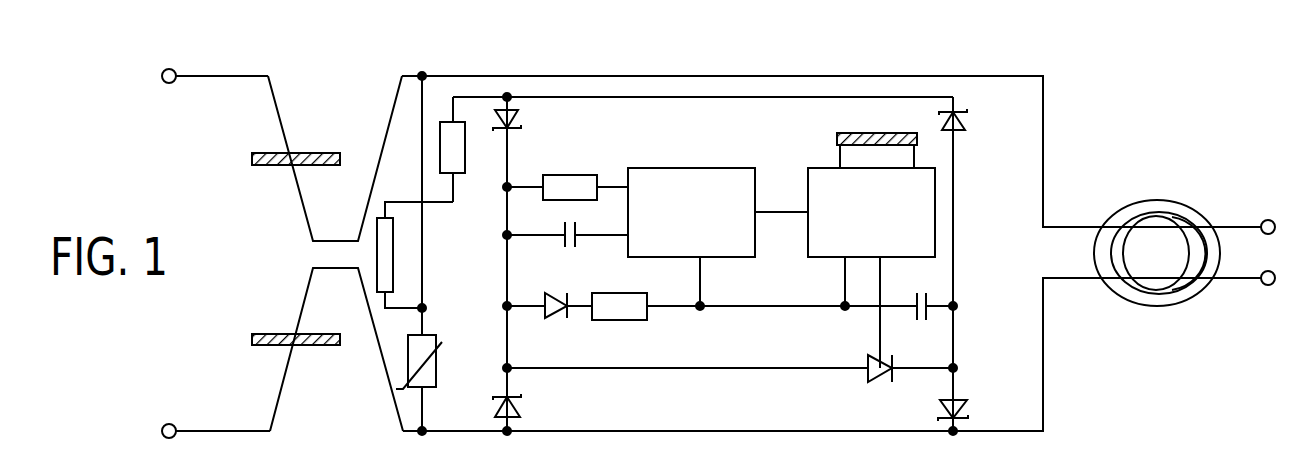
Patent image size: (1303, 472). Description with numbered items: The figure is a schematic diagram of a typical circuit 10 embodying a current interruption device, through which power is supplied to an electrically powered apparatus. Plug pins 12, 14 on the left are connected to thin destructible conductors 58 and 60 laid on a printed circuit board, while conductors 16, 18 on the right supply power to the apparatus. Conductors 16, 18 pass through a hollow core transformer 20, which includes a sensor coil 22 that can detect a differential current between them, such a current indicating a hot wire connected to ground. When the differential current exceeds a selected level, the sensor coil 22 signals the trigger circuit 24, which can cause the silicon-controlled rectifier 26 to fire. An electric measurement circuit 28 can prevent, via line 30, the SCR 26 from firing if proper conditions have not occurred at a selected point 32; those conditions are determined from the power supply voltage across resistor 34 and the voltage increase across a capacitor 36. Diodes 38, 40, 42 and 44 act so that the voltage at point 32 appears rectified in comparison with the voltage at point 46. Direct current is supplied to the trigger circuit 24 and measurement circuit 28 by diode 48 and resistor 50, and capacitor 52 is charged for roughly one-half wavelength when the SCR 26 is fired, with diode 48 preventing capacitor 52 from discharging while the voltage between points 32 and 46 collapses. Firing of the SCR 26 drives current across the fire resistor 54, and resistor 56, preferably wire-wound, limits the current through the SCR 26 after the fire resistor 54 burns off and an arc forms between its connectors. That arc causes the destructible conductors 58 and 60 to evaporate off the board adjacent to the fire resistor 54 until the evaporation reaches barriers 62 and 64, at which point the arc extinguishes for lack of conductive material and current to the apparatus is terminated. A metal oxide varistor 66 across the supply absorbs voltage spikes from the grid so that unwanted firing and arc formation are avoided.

The circuit 10 is at (1126, 89).
The plug pin 12 is at (215, 63).
The plug pin 14 is at (216, 446).
The conductor 16 is at (1266, 212).
The conductor 18 is at (1267, 295).
The hollow core transformer 20 is at (1157, 243).
The sensor coil 22 is at (877, 137).
The trigger circuit 24 is at (871, 268).
The silicon-controlled rectifier 26 is at (730, 381).
The electric measurement circuit 28 is at (691, 237).
The line 30 is at (781, 227).
The selected point 32 is at (504, 307).
The resistor 34 is at (567, 173).
The capacitor 36 is at (567, 246).
The diode 38 is at (521, 124).
The diode 40 is at (520, 407).
The diode 42 is at (967, 123).
The diode 44 is at (965, 409).
The point 46 is at (975, 307).
The diode 48 is at (568, 320).
The resistor 50 is at (718, 320).
The capacitor 52 is at (899, 310).
The fire resistor 54 is at (415, 239).
The resistor 56 is at (464, 149).
The destructible conductor 58 is at (335, 159).
The destructible conductor 60 is at (336, 349).
The barrier 62 is at (286, 145).
The barrier 64 is at (287, 354).
The metal oxide varistor 66 is at (436, 362).